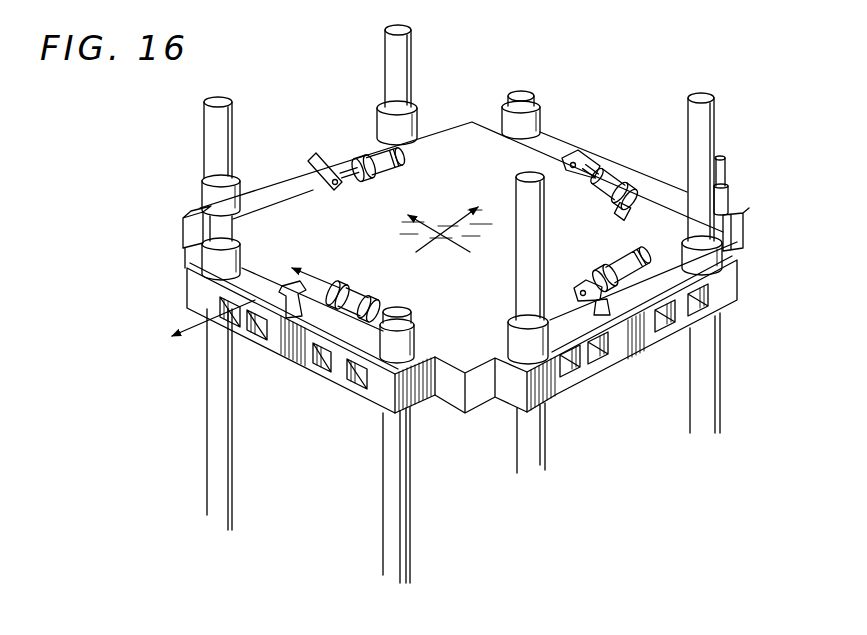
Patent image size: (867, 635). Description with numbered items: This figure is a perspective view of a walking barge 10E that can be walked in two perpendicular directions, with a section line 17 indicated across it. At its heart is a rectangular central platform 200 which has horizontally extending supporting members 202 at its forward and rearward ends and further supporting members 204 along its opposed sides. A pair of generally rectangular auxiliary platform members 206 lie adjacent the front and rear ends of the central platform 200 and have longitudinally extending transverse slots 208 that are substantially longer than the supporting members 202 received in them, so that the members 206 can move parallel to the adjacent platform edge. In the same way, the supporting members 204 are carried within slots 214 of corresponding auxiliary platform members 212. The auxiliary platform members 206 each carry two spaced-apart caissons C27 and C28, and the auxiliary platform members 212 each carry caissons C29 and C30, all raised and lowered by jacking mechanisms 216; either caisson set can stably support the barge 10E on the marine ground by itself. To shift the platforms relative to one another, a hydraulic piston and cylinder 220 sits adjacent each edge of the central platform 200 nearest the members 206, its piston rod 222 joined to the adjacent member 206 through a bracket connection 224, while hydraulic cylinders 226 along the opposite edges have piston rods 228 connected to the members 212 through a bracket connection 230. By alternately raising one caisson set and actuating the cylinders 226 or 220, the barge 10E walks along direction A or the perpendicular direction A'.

The walking barge 10E is at (470, 106).
The section line 17 is at (240, 307).
The central platform 200 is at (290, 216).
The supporting members 202 is at (250, 322).
The supporting members 204 is at (607, 377).
The auxiliary platform members 206 is at (195, 292).
The transverse slots 208 is at (237, 306).
The auxiliary platform members 212 is at (515, 388).
The slots 214 is at (578, 380).
The jacking mechanisms 216 is at (210, 260).
The hydraulic piston and cylinder 220 is at (606, 192).
The piston rod 222 is at (330, 284).
The bracket connection 224 is at (292, 283).
The hydraulic cylinders 226 is at (398, 176).
The piston rods 228 is at (352, 164).
The bracket connection 230 is at (313, 158).
The caisson C27 is at (541, 107).
The caisson C28 is at (722, 164).
The caisson C29 is at (214, 143).
The caisson C30 is at (392, 60).